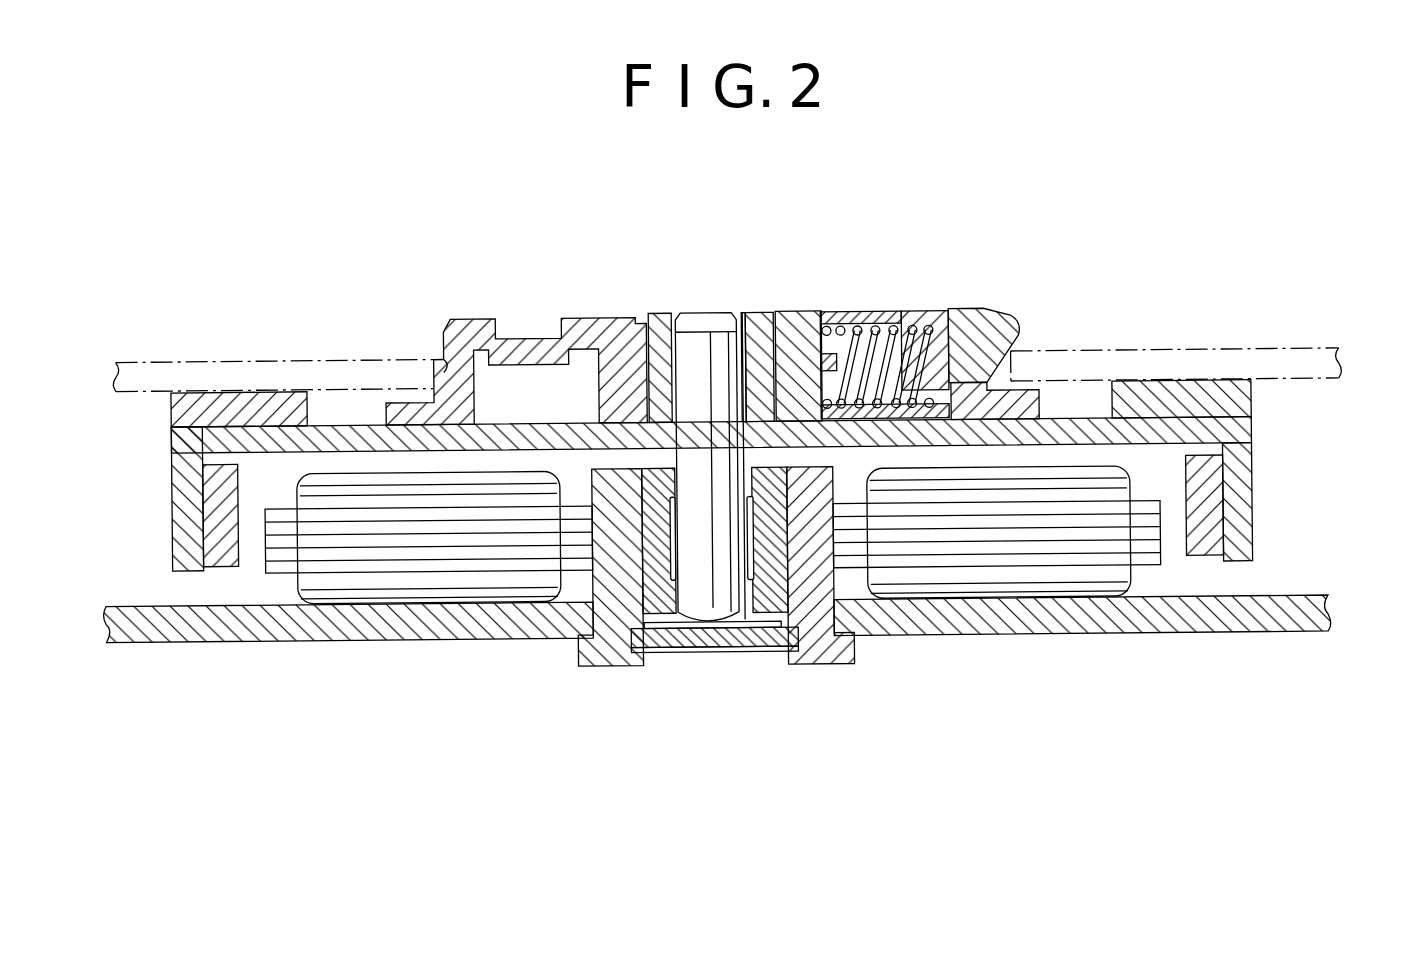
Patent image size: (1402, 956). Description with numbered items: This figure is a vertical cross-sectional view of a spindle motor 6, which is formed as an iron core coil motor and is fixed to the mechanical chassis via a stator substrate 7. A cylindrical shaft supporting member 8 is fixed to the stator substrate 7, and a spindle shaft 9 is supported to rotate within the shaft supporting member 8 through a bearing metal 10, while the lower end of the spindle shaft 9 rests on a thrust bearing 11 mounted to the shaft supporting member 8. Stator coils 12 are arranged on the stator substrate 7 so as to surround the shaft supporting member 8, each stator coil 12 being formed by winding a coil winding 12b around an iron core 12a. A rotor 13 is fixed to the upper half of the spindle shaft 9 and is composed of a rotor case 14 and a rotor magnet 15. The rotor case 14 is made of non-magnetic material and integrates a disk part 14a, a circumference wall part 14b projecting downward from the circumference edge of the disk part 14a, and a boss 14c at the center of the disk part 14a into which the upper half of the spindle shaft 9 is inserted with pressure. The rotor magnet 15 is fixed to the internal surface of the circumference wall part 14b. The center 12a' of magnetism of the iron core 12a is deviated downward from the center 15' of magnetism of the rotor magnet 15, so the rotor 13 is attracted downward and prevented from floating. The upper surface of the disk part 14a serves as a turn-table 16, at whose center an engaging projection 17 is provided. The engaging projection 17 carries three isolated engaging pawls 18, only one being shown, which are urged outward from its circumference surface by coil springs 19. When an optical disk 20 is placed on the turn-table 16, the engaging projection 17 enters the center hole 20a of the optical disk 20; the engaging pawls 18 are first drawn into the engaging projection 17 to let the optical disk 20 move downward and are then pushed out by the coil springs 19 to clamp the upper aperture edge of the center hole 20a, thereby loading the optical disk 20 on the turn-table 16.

The spindle motor 6 is at (766, 280).
The stator substrate 7 is at (1299, 628).
The shaft supporting member 8 is at (606, 646).
The spindle shaft 9 is at (699, 342).
The bearing metal 10 is at (771, 614).
The thrust bearing 11 is at (691, 641).
The stator coil 12 is at (416, 565).
The iron core 12a is at (818, 600).
The center of magnetism of iron core 12a' is at (1278, 532).
The coil winding 12b is at (320, 588).
The rotor 13 is at (237, 416).
The rotor case 14 is at (345, 430).
The disk part 14a is at (1106, 420).
The circumference wall part 14b is at (1254, 452).
The boss 14c is at (625, 316).
The rotor magnet 15 is at (709, 577).
The center of magnetism of rotor magnet 15' is at (1289, 504).
The turn-table 16 is at (1053, 420).
The engaging projection 17 is at (476, 318).
The engaging pawl 18 is at (998, 318).
The coil spring 19 is at (870, 327).
The optical disk 20 is at (1226, 356).
The center hole 20a is at (438, 354).